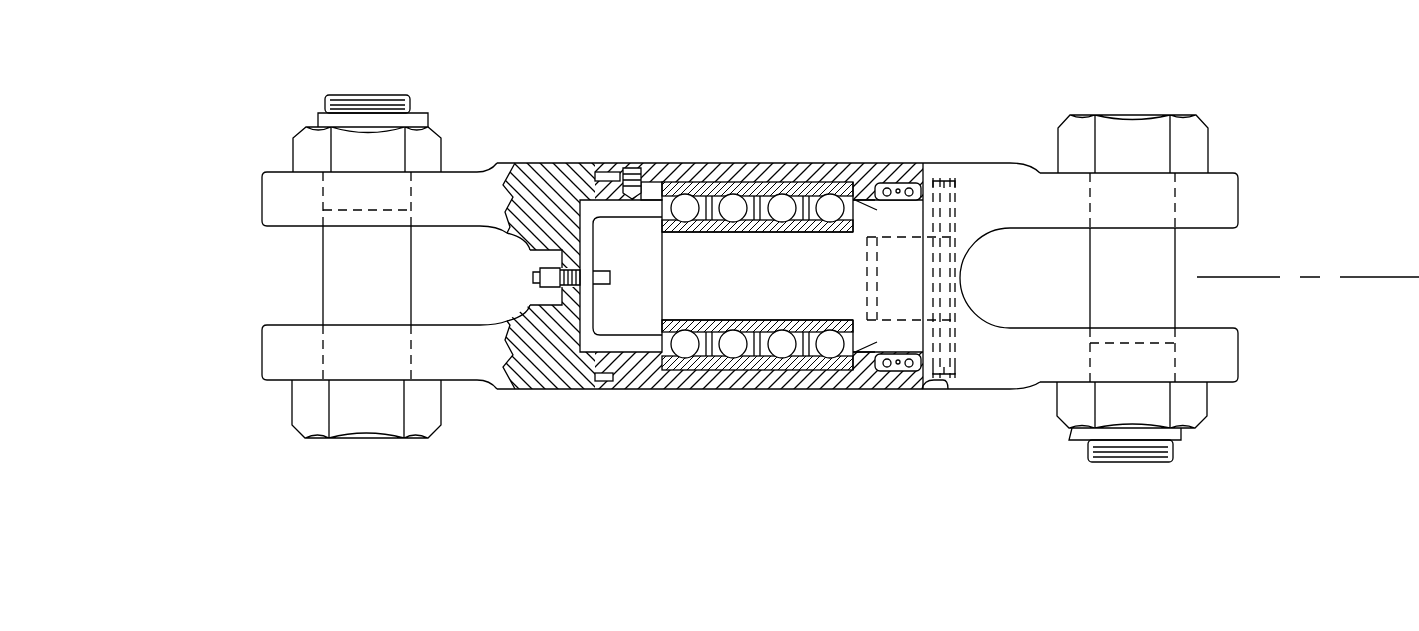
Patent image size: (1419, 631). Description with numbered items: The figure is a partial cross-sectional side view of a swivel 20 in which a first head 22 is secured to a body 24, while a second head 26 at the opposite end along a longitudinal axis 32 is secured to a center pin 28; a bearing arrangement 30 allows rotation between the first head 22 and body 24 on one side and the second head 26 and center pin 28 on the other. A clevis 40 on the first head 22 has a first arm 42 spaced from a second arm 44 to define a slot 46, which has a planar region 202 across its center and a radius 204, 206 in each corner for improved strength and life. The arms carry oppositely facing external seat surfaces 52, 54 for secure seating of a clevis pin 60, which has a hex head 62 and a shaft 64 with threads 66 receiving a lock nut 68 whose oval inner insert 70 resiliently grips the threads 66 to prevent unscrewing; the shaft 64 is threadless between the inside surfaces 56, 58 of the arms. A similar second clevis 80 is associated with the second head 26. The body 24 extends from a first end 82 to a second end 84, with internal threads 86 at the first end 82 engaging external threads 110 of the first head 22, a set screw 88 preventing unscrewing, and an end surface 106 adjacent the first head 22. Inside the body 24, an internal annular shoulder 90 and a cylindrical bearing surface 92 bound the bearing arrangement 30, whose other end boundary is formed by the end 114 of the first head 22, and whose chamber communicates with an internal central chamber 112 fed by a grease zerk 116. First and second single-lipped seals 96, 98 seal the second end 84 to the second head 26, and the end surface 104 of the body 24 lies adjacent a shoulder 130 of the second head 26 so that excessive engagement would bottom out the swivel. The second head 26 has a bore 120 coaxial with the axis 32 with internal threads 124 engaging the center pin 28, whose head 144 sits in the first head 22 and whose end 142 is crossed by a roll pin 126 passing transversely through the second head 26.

The swivel 20 is at (170, 133).
The first head 22 is at (564, 149).
The body 24 is at (741, 151).
The second head 26 is at (977, 151).
The center pin 28 is at (603, 340).
The bearing arrangement 30 is at (791, 163).
The longitudinal axis 32 is at (1368, 275).
The clevis 40 is at (260, 382).
The first arm 42 is at (262, 197).
The second arm 44 is at (260, 350).
The slot 46 is at (244, 281).
The external seat surface 52 is at (273, 172).
The external seat surface 54 is at (277, 380).
The inside surface 56 is at (290, 228).
The inside surface 58 is at (287, 325).
The clevis pin 60 is at (298, 438).
The hex head 62 is at (367, 438).
The shaft 64 is at (410, 282).
The threads 66 is at (388, 105).
The lock nut 68 is at (440, 148).
The inner insert 70 is at (320, 120).
The second clevis 80 is at (1240, 175).
The first end 82 is at (627, 388).
The second end 84 is at (883, 390).
The internal threads 86 is at (652, 390).
The set screw 88 is at (634, 166).
The internal annular shoulder 90 is at (836, 379).
The cylindrical bearing surface 92 is at (741, 373).
The first seal 96 is at (878, 183).
The second seal 98 is at (907, 185).
The end surface 104 is at (912, 390).
The end surface 106 is at (592, 372).
The external threads 110 is at (609, 170).
The internal central chamber 112 is at (547, 207).
The end 114 is at (700, 165).
The grease zerk 116 is at (533, 280).
The bore 120 is at (980, 331).
The internal threads 124 is at (957, 210).
The roll pin 126 is at (1000, 167).
The shoulder 130 is at (940, 390).
The end 142 is at (972, 236).
The head 144 is at (623, 345).
The planar region 202 is at (532, 272).
The radius 204 is at (493, 227).
The radius 206 is at (482, 323).